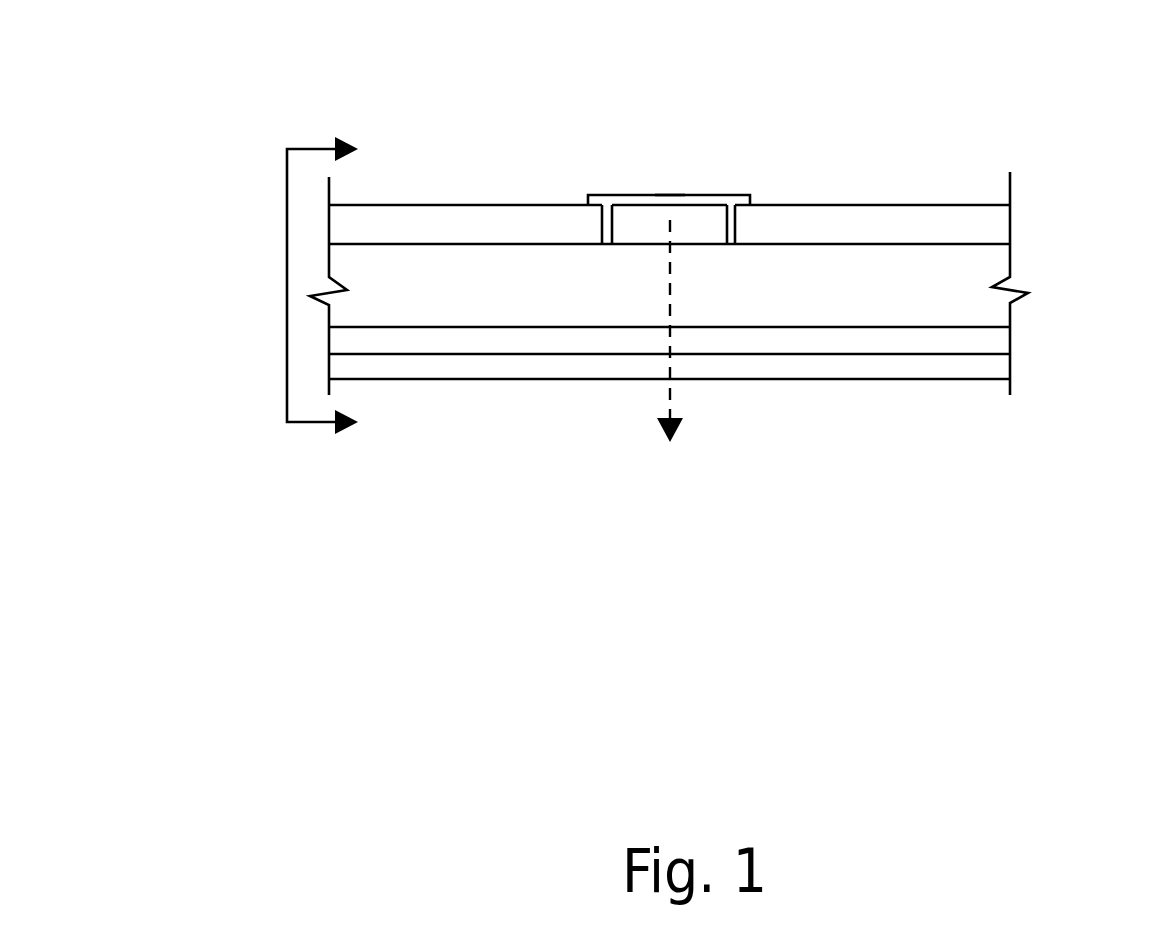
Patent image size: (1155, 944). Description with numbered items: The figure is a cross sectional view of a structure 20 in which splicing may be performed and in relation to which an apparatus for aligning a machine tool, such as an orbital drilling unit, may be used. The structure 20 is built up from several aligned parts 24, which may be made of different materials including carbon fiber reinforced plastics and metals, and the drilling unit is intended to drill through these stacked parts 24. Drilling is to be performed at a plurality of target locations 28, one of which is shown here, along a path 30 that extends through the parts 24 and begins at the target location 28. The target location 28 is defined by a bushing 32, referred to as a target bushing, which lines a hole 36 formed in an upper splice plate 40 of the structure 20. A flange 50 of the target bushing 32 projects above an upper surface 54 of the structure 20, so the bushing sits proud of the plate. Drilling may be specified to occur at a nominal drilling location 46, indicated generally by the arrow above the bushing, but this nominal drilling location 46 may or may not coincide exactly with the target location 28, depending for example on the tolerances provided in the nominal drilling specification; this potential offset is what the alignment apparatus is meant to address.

The structure 20 is at (968, 500).
The parts 24 is at (287, 288).
The target location 28 is at (645, 226).
The path 30 is at (668, 310).
The bushing 32 is at (705, 195).
The hole 36 is at (668, 195).
The upper splice plate 40 is at (895, 218).
The nominal drilling location 46 is at (677, 125).
The flange 50 is at (590, 200).
The upper surface 54 is at (435, 205).